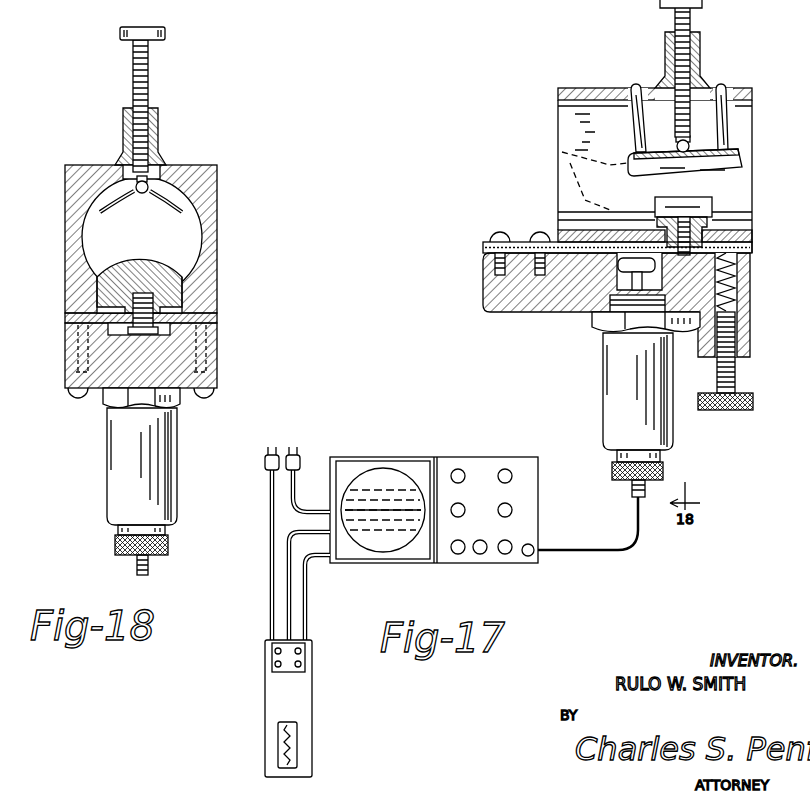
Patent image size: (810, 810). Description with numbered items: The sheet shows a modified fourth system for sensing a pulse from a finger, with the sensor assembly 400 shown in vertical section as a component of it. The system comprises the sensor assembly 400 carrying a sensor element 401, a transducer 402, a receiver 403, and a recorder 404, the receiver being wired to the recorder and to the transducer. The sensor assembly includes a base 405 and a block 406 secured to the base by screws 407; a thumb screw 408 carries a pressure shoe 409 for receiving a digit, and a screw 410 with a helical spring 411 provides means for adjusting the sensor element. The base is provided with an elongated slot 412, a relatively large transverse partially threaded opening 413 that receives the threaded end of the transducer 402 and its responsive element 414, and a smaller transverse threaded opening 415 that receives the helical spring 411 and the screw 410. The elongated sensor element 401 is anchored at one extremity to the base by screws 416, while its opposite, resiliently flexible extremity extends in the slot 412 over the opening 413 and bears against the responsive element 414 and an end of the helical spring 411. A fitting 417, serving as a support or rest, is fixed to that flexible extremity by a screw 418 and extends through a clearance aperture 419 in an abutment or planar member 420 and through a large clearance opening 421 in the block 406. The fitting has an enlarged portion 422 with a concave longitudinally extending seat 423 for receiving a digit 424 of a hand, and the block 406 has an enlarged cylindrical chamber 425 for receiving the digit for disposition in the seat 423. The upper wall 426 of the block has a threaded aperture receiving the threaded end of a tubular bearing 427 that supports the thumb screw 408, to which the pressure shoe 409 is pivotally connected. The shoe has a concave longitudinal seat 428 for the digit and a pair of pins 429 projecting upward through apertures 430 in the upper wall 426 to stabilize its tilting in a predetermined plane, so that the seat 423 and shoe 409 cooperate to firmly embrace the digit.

In FIG. 18, the sensor assembly 400 is at (229, 165).
In FIG. 17, the sensor assembly 400 is at (729, 55).
In FIG. 17, the sensor element 401 is at (752, 248).
In FIG. 18, the transducer 402 is at (118, 456).
In FIG. 17, the transducer 402 is at (615, 370).
In FIG. 17, the receiver 403 is at (458, 457).
In FIG. 17, the recorder 404 is at (312, 713).
In FIG. 18, the base 405 is at (217, 362).
In FIG. 17, the base 405 is at (483, 295).
In FIG. 18, the block 406 is at (217, 233).
In FIG. 17, the block 406 is at (752, 95).
In FIG. 18, the screws 407 is at (210, 392).
In FIG. 18, the thumb screw 408 is at (150, 78).
In FIG. 17, the thumb screw 408 is at (673, 20).
In FIG. 18, the pressure shoe 409 is at (153, 210).
In FIG. 17, the pressure shoe 409 is at (695, 142).
In FIG. 17, the screw 410 is at (745, 393).
In FIG. 17, the helical spring 411 is at (737, 285).
In FIG. 18, the elongated slot 412 is at (170, 331).
In FIG. 17, the elongated slot 412 is at (558, 220).
In FIG. 18, the partially threaded opening 413 is at (118, 398).
In FIG. 17, the partially threaded opening 413 is at (592, 318).
In FIG. 17, the responsive element 414 is at (636, 258).
In FIG. 17, the threaded opening 415 is at (740, 345).
In FIG. 17, the screws 416 is at (532, 228).
In FIG. 18, the fitting 417 is at (138, 294).
In FIG. 17, the fitting 417 is at (693, 186).
In FIG. 18, the screw 418 is at (144, 300).
In FIG. 17, the screw 418 is at (690, 215).
In FIG. 17, the clearance aperture 419 is at (752, 236).
In FIG. 18, the abutment or planar member 420 is at (217, 318).
In FIG. 17, the abutment or planar member 420 is at (483, 245).
In FIG. 17, the clearance opening 421 is at (648, 215).
In FIG. 17, the enlarged portion 422 is at (720, 212).
In FIG. 18, the concave seat 423 is at (128, 260).
In FIG. 17, the concave seat 423 is at (664, 200).
In FIG. 17, the digit 424 is at (570, 156).
In FIG. 18, the cylindrical chamber 425 is at (185, 248).
In FIG. 17, the cylindrical chamber 425 is at (565, 125).
In FIG. 18, the upper wall 426 is at (172, 170).
In FIG. 17, the upper wall 426 is at (600, 88).
In FIG. 18, the tubular bearing 427 is at (158, 122).
In FIG. 17, the tubular bearing 427 is at (665, 45).
In FIG. 18, the concave longitudinal seat 428 is at (129, 206).
In FIG. 17, the concave longitudinal seat 428 is at (742, 160).
In FIG. 17, the pins 429 is at (637, 135).
In FIG. 17, the apertures 430 is at (730, 80).